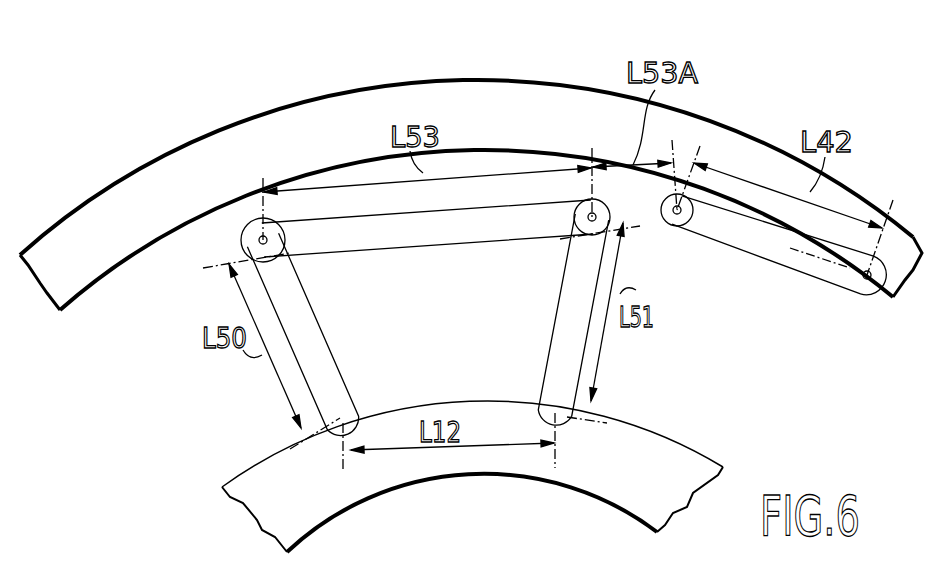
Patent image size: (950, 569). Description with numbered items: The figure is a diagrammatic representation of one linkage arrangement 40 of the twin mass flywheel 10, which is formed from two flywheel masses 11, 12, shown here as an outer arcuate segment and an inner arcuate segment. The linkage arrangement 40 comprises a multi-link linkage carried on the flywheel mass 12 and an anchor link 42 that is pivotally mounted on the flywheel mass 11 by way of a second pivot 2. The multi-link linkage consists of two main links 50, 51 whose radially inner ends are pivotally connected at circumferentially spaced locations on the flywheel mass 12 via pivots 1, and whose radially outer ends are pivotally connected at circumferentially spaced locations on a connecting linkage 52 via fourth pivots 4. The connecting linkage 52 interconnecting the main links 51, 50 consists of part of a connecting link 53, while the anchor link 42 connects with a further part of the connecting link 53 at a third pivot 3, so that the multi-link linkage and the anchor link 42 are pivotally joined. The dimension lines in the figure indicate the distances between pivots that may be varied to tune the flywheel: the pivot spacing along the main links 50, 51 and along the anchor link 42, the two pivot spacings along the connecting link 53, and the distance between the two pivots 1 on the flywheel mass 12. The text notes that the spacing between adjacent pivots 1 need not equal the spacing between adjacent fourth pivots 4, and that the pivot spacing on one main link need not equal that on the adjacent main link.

The pivots 1 is at (545, 412).
The second pivot 2 is at (867, 288).
The third pivot 3 is at (677, 227).
The fourth pivots 4 is at (276, 244).
The twin mass flywheel 10 is at (500, 76).
The flywheel mass 11 is at (138, 190).
The flywheel mass 12 is at (503, 460).
The linkage arrangement 40 is at (690, 323).
The anchor link 42 is at (779, 245).
The main link 50 is at (302, 334).
The main link 51 is at (573, 319).
The connecting linkage 52 is at (391, 250).
The connecting link 53 is at (433, 230).